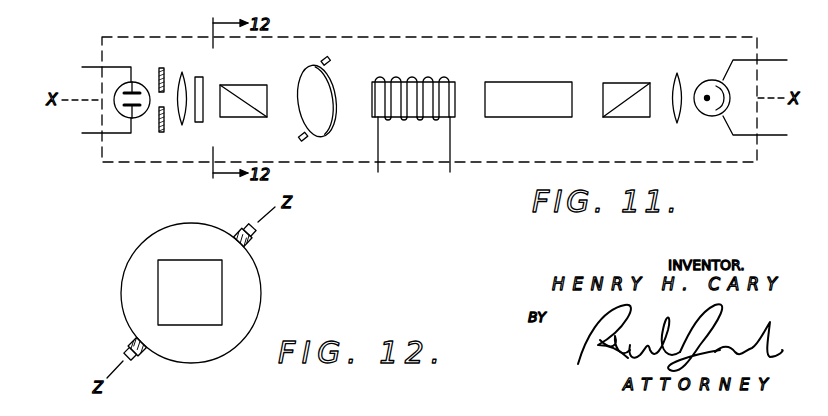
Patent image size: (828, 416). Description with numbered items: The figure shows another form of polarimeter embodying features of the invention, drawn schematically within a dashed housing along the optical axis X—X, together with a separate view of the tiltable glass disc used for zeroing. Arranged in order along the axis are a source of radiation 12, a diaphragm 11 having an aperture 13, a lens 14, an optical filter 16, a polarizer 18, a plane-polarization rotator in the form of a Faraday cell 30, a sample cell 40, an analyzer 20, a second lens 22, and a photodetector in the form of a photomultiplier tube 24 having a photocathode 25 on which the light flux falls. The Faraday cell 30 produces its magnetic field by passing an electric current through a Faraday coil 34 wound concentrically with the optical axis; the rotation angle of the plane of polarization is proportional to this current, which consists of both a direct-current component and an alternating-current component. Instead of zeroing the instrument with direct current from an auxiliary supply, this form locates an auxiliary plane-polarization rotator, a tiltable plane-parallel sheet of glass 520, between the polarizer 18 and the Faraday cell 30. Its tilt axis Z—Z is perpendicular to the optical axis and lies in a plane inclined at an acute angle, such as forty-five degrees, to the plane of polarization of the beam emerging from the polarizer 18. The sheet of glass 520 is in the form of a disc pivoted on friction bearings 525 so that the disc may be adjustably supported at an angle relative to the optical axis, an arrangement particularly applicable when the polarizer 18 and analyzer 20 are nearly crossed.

In FIG. 11, the diaphragm 11 is at (161, 68).
In FIG. 11, the source of radiation 12 is at (138, 82).
In FIG. 11, the aperture 13 is at (154, 103).
In FIG. 11, the lens 14 is at (184, 78).
In FIG. 11, the optical filter 16 is at (198, 123).
In FIG. 11, the polarizer 18 is at (243, 88).
In FIG. 12, the polarizer 18 is at (160, 285).
In FIG. 11, the analyzer 20 is at (633, 120).
In FIG. 11, the second lens 22 is at (675, 117).
In FIG. 11, the photomultiplier tube 24 is at (705, 78).
In FIG. 11, the photocathode 25 is at (705, 104).
In FIG. 11, the Faraday cell 30 is at (408, 74).
In FIG. 11, the Faraday coil 34 is at (424, 106).
In FIG. 11, the sample cell 40 is at (542, 80).
In FIG. 11, the tiltable plane-parallel sheet of glass 520 is at (338, 112).
In FIG. 12, the tiltable plane-parallel sheet of glass 520 is at (252, 293).
In FIG. 12, the friction bearings 525 is at (262, 240).